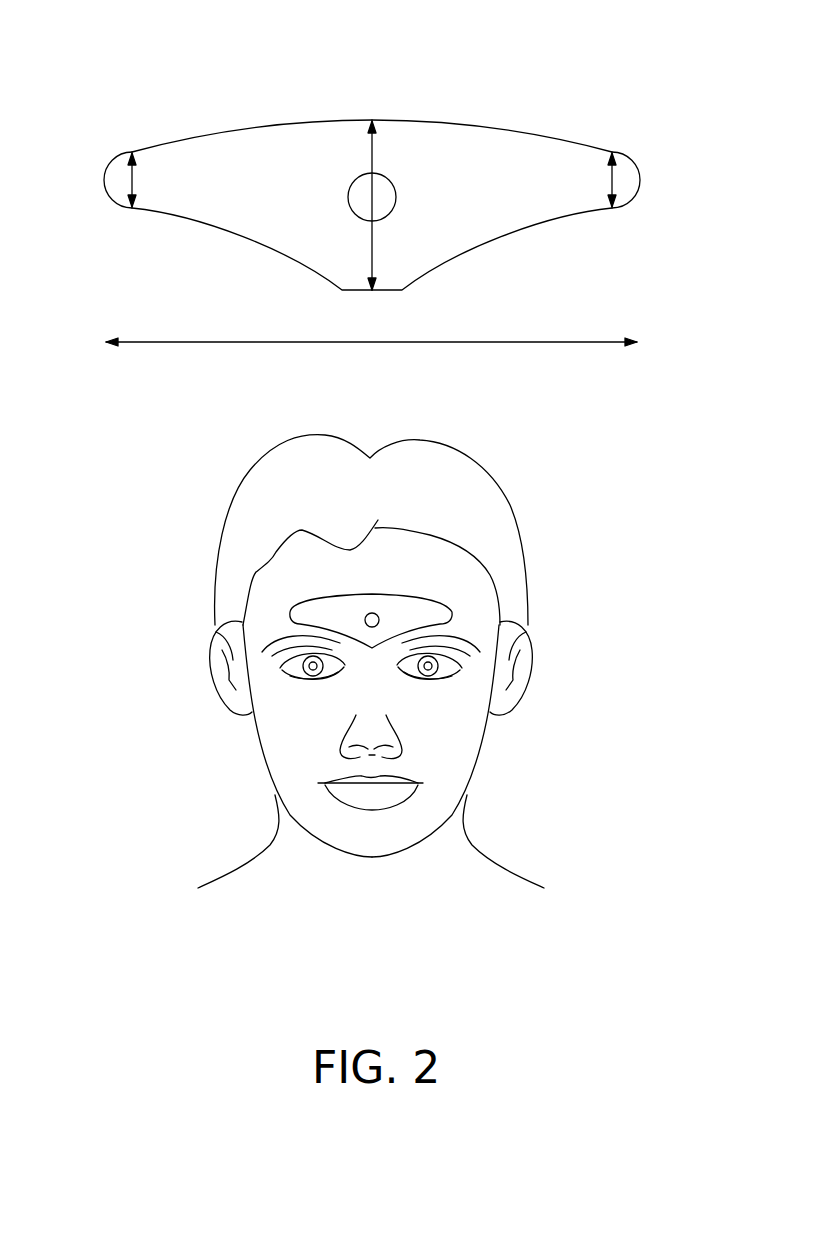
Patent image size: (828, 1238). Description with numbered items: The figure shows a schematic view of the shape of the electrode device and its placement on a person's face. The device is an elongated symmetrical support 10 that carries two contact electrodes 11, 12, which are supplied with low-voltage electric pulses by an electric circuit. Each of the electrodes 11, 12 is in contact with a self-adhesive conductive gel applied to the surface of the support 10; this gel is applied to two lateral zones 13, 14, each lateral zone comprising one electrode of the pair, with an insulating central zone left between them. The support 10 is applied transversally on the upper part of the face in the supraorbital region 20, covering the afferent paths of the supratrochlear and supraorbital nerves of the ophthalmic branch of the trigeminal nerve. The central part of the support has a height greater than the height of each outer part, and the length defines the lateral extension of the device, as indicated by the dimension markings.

The elongated symmetrical support 10 is at (371, 334).
The contact electrode 11 is at (335, 168).
The contact electrode 12 is at (405, 168).
The lateral zone 13 is at (225, 185).
The lateral zone 14 is at (498, 192).
The supraorbital region 20 is at (333, 593).